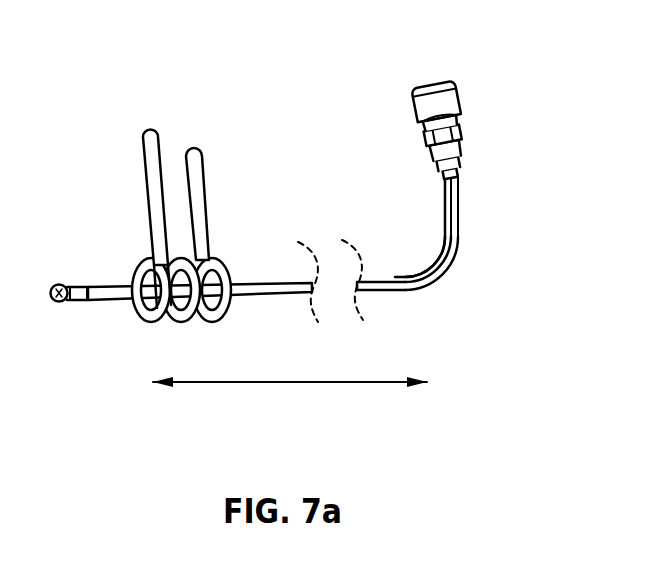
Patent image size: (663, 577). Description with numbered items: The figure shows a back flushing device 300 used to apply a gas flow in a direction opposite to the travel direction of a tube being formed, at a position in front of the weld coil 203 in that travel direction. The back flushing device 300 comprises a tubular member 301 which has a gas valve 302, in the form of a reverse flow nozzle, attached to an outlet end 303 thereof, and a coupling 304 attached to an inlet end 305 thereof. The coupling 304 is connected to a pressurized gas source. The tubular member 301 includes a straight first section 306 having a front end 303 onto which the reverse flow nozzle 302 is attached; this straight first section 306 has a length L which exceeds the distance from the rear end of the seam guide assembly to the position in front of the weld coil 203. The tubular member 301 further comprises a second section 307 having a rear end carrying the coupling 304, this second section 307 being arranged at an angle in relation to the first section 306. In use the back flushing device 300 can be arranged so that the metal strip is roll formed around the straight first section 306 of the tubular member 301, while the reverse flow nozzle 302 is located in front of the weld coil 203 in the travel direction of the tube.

The back flushing device 300 is at (297, 89).
The weld coil 203 is at (157, 198).
The tubular member 301 is at (400, 289).
The gas valve 302 is at (64, 288).
The outlet end 303 is at (102, 296).
The coupling 304 is at (452, 122).
The inlet end 305 is at (456, 212).
The straight first section 306 is at (260, 291).
The second section 307 is at (433, 257).